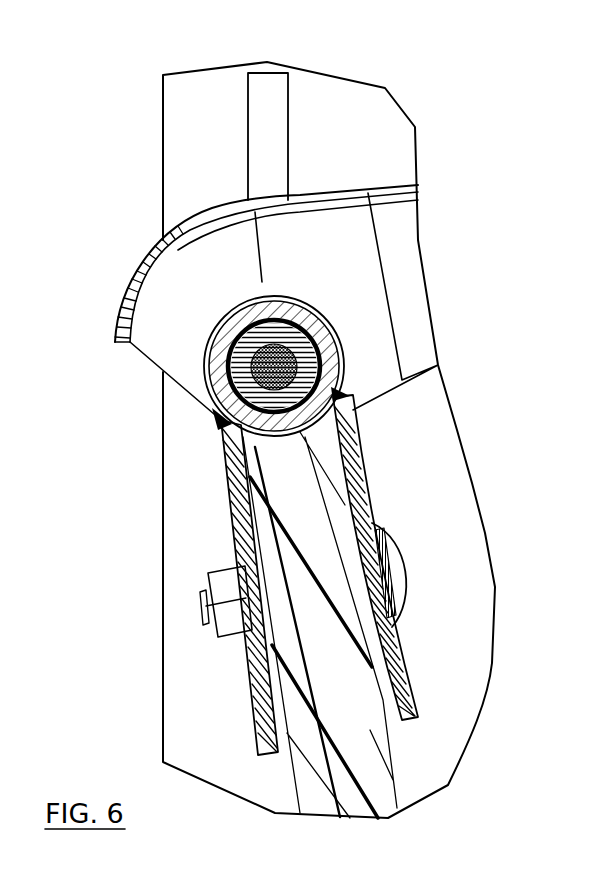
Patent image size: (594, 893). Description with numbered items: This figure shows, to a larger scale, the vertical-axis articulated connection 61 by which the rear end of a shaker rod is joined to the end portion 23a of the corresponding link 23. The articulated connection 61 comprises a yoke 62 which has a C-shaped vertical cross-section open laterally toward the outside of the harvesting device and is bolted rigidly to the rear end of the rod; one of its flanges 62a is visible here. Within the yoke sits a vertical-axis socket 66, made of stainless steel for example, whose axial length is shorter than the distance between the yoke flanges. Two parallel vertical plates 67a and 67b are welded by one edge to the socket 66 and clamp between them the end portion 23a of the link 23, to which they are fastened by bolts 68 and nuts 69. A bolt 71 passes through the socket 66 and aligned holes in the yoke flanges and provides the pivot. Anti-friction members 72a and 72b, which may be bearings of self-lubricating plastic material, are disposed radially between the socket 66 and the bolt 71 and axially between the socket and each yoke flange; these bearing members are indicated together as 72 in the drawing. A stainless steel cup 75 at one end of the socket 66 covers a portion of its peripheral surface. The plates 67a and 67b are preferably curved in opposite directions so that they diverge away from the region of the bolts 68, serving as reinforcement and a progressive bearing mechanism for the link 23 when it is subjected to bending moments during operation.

The link 23 is at (398, 783).
The end portion of the link 23a is at (322, 512).
The articulated connection 61 is at (130, 397).
The yoke 62 is at (155, 243).
The flange of the yoke 62a is at (153, 342).
The socket 66 is at (300, 300).
The vertical plate 67a is at (232, 498).
The vertical plate 67b is at (357, 480).
The bolt 68 is at (404, 574).
The nut 69 is at (220, 632).
The bolt 71 is at (287, 375).
The bearing ring 72 is at (234, 307).
The anti-friction member 72a is at (340, 327).
The anti-friction member 72b is at (340, 327).
The cup 75 is at (222, 322).